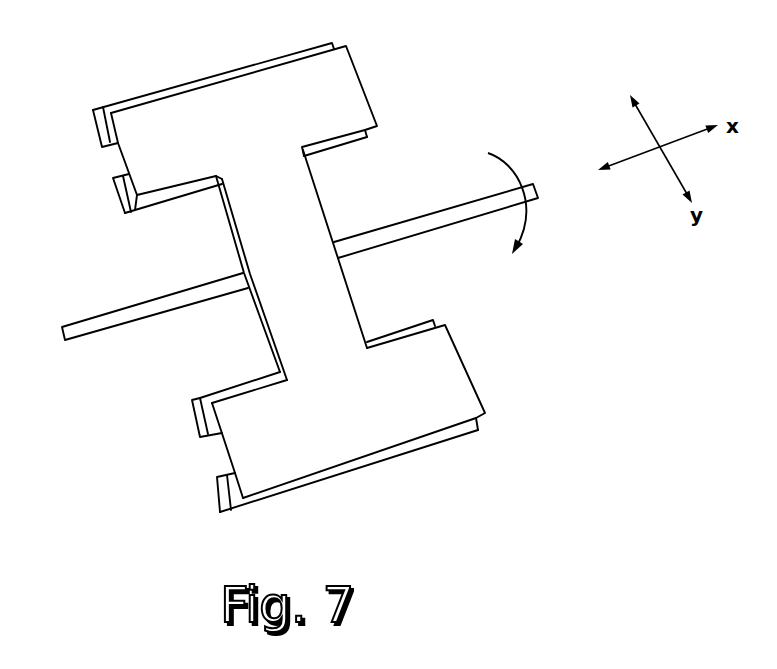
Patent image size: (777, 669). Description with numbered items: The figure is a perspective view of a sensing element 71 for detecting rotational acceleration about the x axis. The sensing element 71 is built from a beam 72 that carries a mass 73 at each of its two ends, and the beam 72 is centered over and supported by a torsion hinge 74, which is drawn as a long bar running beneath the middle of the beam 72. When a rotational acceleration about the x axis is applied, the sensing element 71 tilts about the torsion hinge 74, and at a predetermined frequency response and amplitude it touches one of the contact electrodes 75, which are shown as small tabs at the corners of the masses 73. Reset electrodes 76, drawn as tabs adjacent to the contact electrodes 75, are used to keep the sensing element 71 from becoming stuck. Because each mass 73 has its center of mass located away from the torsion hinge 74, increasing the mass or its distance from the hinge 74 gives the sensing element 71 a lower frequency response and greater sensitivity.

The sensing element 71 is at (128, 83).
The beam 72 is at (293, 198).
The mass 73 is at (342, 87).
The torsion hinge 74 is at (408, 225).
The contact electrode 75 is at (100, 127).
The reset electrode 76 is at (127, 203).